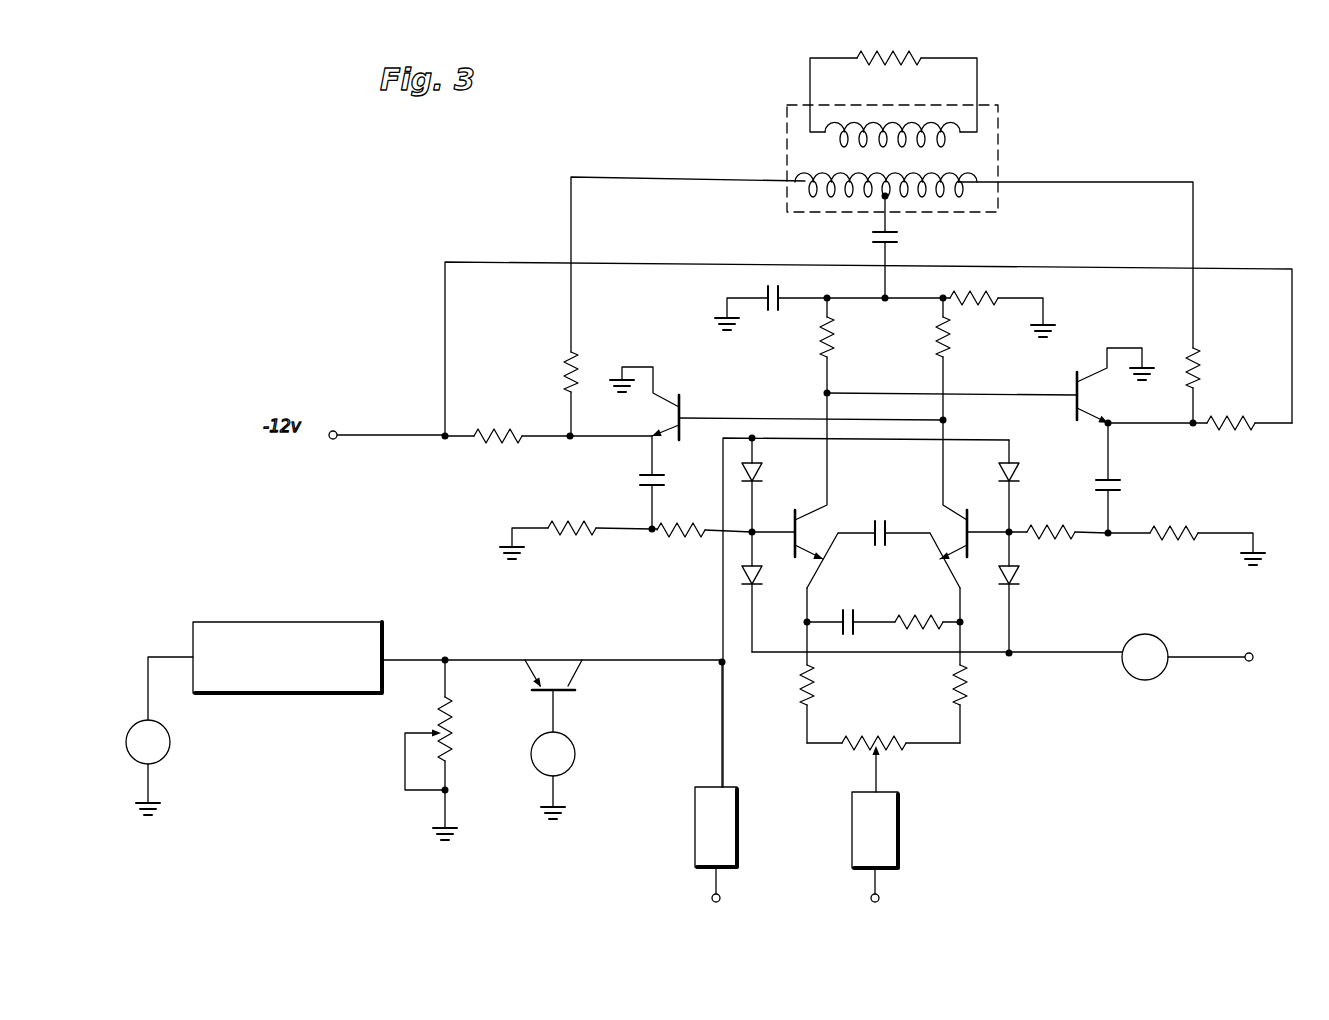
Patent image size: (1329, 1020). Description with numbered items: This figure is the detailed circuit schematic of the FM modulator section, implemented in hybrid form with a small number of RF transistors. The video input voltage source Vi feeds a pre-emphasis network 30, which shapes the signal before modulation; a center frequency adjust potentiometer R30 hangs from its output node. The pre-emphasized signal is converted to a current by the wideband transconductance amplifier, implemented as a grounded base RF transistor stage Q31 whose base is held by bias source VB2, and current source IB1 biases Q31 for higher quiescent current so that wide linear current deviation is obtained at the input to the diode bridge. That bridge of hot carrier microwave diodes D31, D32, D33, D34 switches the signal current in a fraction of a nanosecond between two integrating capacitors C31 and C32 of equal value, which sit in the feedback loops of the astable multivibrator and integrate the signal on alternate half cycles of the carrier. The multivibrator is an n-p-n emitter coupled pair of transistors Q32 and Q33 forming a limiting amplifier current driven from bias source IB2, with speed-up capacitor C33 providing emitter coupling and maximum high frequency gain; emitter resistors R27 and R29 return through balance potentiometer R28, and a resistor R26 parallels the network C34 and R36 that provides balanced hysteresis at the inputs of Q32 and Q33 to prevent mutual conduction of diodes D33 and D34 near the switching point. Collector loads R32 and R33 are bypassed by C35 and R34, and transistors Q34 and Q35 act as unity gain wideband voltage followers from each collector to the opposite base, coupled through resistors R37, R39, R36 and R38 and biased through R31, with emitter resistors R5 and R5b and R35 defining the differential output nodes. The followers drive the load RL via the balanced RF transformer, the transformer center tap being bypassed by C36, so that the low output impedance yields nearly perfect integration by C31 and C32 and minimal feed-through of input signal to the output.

The pre-emphasis network 30 is at (336, 603).
The load RL is at (946, 40).
The capacitor C36 is at (903, 247).
The capacitor C35 is at (771, 314).
The resistor R34 is at (941, 315).
The resistor R32 is at (844, 345).
The resistor R33 is at (926, 359).
The sense resistor R5 is at (554, 394).
The sense resistor R5 (right) R5b is at (1208, 403).
The resistor R31 is at (565, 442).
The unity gain voltage follower Q34 is at (644, 403).
The integrating capacitor C31 is at (631, 482).
The resistor R39 is at (576, 545).
The resistor R37 is at (702, 548).
The microwave diode D31 is at (767, 485).
The microwave diode D32 is at (1027, 486).
The microwave diode D33 is at (767, 592).
The microwave diode D34 is at (1027, 592).
The coupled transistor Q32 is at (813, 477).
The coupled transistor Q33 is at (944, 491).
The speed-up capacitor C33 is at (883, 554).
The hysteresis capacitor C34 is at (851, 625).
The resistor R26 is at (927, 625).
The resistor R27 is at (784, 704).
The resistor R29 is at (977, 704).
The balance potentiometer R28 is at (883, 747).
The unity gain voltage follower Q35 is at (1115, 387).
The resistor R35 is at (1242, 438).
The integrating capacitor C32 is at (1125, 478).
The hysteresis resistor R36 is at (1058, 547).
The resistor R38 is at (1186, 548).
The input voltage source Vi is at (150, 736).
The center frequency adjust potentiometer R30 is at (359, 750).
The grounded base RF transistor stage Q31 is at (553, 664).
The bias voltage source VB2 is at (553, 754).
The current source IB1 is at (730, 848).
The bias source IB2 is at (888, 851).